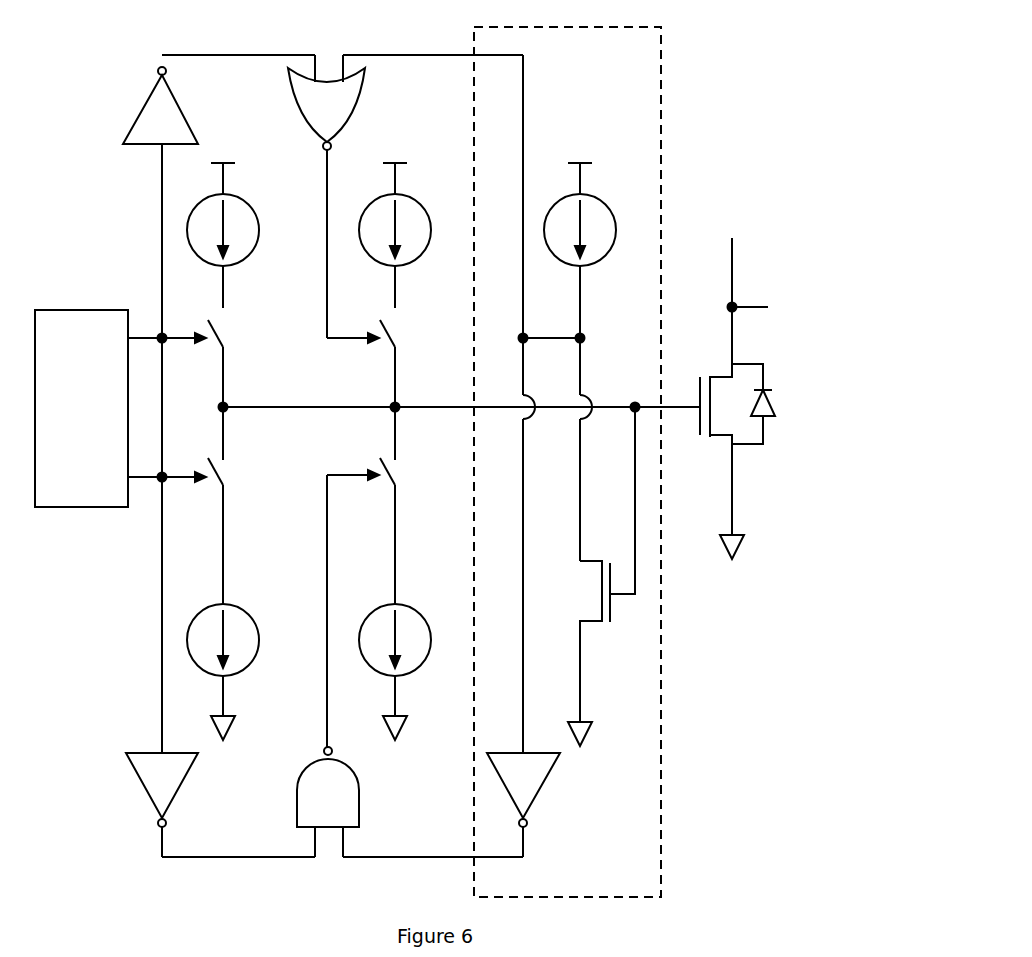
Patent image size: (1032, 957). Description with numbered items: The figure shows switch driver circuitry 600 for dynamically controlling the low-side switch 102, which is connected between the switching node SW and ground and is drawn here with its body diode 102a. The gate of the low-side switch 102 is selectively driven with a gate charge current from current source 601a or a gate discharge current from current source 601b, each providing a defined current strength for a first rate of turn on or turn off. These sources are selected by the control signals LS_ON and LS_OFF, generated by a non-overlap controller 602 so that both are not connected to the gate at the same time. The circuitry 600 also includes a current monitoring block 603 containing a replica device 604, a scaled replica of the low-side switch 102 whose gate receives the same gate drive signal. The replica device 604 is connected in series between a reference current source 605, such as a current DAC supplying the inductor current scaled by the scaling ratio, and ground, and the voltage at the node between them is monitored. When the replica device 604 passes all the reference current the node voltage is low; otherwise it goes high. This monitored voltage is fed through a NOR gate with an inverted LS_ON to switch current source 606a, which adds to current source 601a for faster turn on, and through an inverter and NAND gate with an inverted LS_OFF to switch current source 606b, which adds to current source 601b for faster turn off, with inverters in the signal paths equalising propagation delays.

The switch driver circuitry 600 is at (425, 460).
The current source 601a is at (242, 193).
The current source 601b is at (214, 573).
The non-overlap circuit 602 is at (81, 408).
The current monitoring block 603 is at (567, 462).
The replica device 604 is at (621, 570).
The current source 605 is at (595, 266).
The current source 606a is at (425, 200).
The current source 606b is at (409, 573).
The low-side switch 102 is at (718, 398).
The body diode 102a is at (773, 435).